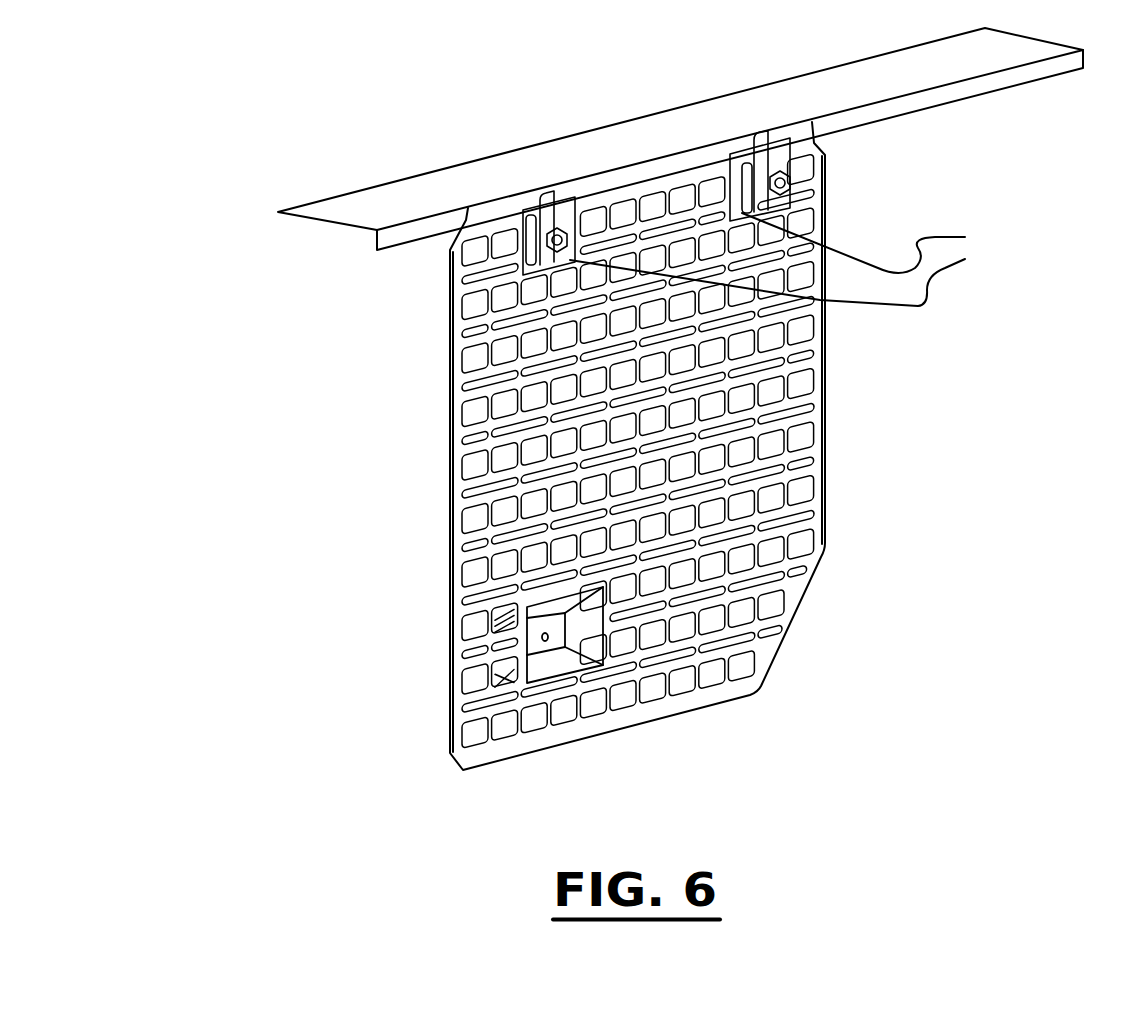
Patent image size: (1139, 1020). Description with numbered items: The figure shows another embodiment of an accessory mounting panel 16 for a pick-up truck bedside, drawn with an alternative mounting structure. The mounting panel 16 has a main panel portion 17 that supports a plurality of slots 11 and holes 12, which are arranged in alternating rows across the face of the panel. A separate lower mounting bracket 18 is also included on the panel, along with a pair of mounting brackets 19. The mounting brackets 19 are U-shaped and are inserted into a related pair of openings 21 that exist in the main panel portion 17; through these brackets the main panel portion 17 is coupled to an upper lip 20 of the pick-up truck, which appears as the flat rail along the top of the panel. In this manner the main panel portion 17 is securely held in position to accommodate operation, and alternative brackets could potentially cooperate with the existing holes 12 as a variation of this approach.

The slots 11 is at (475, 441).
The holes 12 is at (475, 306).
The accessory mounting panel 16 is at (684, 409).
The main panel portion 17 is at (822, 430).
The lower mounting bracket 18 is at (566, 661).
The mounting brackets 19 is at (780, 157).
The upper lip 20 is at (408, 192).
The openings 21 is at (802, 258).